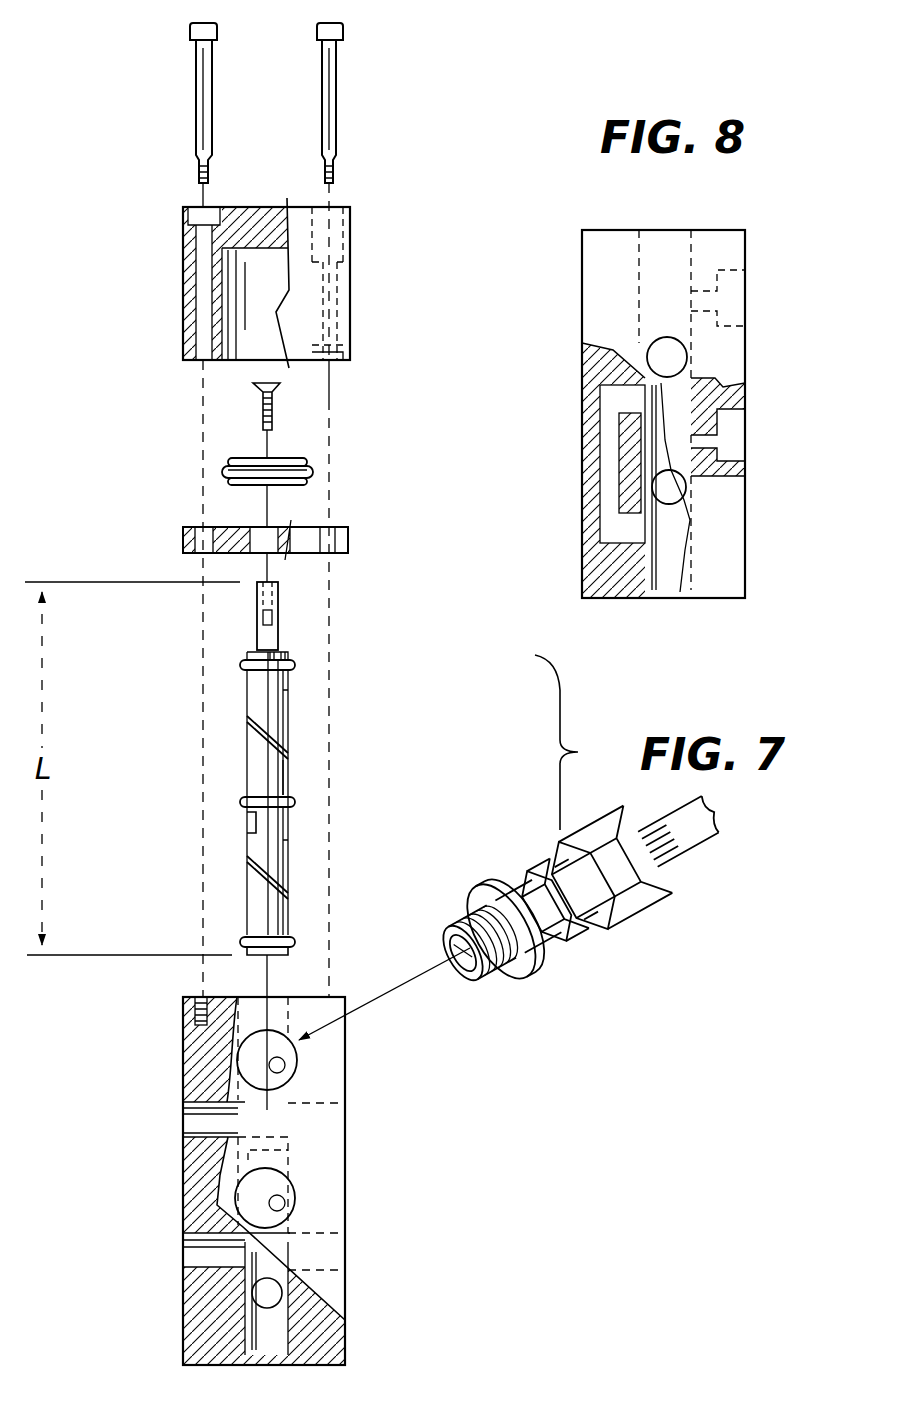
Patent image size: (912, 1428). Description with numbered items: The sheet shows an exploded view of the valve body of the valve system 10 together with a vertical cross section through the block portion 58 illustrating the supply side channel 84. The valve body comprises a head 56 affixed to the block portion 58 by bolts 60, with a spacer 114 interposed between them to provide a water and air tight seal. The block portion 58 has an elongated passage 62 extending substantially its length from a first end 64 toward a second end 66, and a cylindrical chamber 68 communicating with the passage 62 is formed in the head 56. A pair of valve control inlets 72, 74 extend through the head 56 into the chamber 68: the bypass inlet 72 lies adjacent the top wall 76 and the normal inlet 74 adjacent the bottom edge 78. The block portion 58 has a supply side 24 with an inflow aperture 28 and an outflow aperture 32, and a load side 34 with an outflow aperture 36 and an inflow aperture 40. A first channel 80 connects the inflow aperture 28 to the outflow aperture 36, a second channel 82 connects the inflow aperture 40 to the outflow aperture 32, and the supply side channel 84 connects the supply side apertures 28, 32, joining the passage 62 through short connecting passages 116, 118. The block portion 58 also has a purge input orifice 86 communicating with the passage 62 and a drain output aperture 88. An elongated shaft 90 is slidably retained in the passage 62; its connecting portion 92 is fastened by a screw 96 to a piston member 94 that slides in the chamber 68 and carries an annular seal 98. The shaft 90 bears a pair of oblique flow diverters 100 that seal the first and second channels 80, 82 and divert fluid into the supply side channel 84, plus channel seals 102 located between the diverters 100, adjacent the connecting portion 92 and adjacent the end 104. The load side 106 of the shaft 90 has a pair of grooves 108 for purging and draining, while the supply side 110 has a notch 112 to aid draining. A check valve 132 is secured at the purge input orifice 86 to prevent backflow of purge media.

In FIG. 7, the system 10 is at (422, 612).
In FIG. 7, the supply side of the valve body 24 is at (183, 1197).
In FIG. 7, the inflow aperture 28 is at (200, 1128).
In FIG. 8, the inflow aperture 28 is at (676, 357).
In FIG. 7, the outflow aperture 32 is at (190, 1252).
In FIG. 8, the outflow aperture 32 is at (674, 492).
In FIG. 7, the load side of the valve body 34 is at (345, 1220).
In FIG. 7, the outflow aperture 36 is at (333, 1110).
In FIG. 7, the inflow aperture 40 is at (333, 1257).
In FIG. 7, the head 56 is at (282, 273).
In FIG. 7, the block portion 58 is at (277, 1171).
In FIG. 8, the block portion 58 is at (672, 426).
In FIG. 7, the bolts 60 is at (188, 96).
In FIG. 7, the elongated passage 62 is at (268, 1345).
In FIG. 8, the elongated passage 62 is at (660, 590).
In FIG. 7, the first end 64 is at (203, 997).
In FIG. 7, the second end 66 is at (207, 1368).
In FIG. 7, the cylindrical chamber 68 is at (272, 268).
In FIG. 7, the valve control inlet 72 is at (348, 263).
In FIG. 7, the valve control inlet 74 is at (350, 345).
In FIG. 7, the top wall 76 is at (250, 248).
In FIG. 7, the bottom edge 78 is at (332, 360).
In FIG. 7, the first channel 80 is at (200, 1105).
In FIG. 7, the second channel 82 is at (252, 1256).
In FIG. 8, the supply side channel 84 is at (600, 472).
In FIG. 7, the purge input orifice 86 is at (290, 1062).
In FIG. 8, the purge input orifice 86 is at (748, 291).
In FIG. 7, the drain output aperture 88 is at (285, 1195).
In FIG. 8, the drain output aperture 88 is at (733, 428).
In FIG. 7, the elongated shaft 90 is at (272, 786).
In FIG. 7, the connecting portion 92 is at (279, 612).
In FIG. 7, the piston member 94 is at (305, 460).
In FIG. 7, the screw 96 is at (262, 408).
In FIG. 7, the annular seal 98 is at (222, 471).
In FIG. 7, the flow diverters 100 is at (288, 757).
In FIG. 7, the channel seals 102 is at (295, 665).
In FIG. 7, the end of the shaft 104 is at (280, 957).
In FIG. 7, the load side of the shaft 106 is at (288, 783).
In FIG. 7, the grooves 108 is at (288, 700).
In FIG. 7, the supply side of the shaft 110 is at (247, 906).
In FIG. 7, the notch 112 is at (250, 820).
In FIG. 7, the spacer 114 is at (348, 540).
In FIG. 7, the connecting passage 116 is at (290, 1152).
In FIG. 8, the connecting passage 116 is at (626, 385).
In FIG. 7, the connecting passage 118 is at (272, 1300).
In FIG. 8, the connecting passage 118 is at (606, 552).
In FIG. 7, the check valve 132 is at (668, 903).